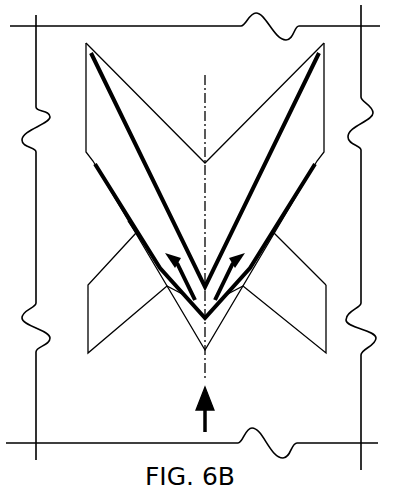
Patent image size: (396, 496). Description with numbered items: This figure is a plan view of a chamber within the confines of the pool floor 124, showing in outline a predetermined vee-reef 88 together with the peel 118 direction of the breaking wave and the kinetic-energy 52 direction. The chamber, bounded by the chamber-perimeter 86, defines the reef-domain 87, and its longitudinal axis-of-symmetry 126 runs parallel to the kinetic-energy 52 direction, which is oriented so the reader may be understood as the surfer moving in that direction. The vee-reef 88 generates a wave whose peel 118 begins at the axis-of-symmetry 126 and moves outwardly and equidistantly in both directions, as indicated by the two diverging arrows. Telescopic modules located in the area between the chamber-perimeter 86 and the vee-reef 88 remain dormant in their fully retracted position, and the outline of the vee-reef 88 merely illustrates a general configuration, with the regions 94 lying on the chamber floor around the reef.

The kinetic-energy 52 is at (201, 409).
The chamber-perimeter 86 is at (302, 259).
The reef-domain 87 is at (117, 246).
The vee-reef 88 is at (130, 161).
The panel surface 94 is at (242, 180).
The peel 118 is at (182, 297).
The pool floor 124 is at (268, 78).
The axis-of-symmetry 126 is at (203, 87).